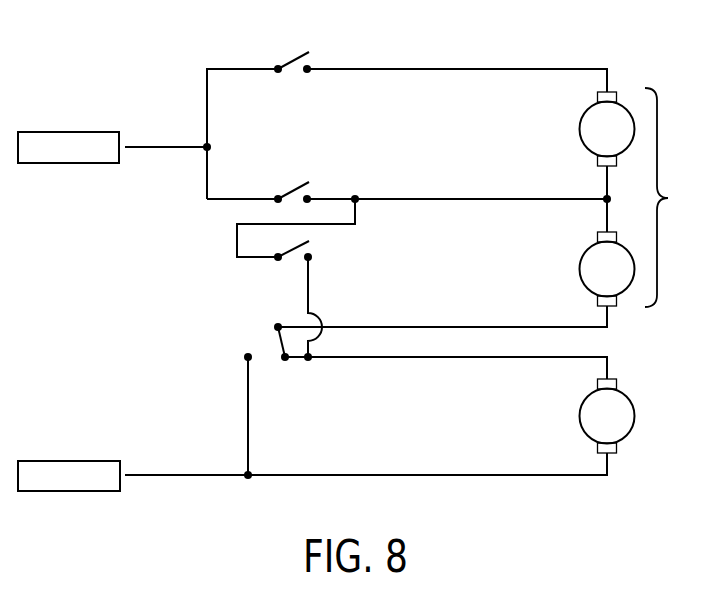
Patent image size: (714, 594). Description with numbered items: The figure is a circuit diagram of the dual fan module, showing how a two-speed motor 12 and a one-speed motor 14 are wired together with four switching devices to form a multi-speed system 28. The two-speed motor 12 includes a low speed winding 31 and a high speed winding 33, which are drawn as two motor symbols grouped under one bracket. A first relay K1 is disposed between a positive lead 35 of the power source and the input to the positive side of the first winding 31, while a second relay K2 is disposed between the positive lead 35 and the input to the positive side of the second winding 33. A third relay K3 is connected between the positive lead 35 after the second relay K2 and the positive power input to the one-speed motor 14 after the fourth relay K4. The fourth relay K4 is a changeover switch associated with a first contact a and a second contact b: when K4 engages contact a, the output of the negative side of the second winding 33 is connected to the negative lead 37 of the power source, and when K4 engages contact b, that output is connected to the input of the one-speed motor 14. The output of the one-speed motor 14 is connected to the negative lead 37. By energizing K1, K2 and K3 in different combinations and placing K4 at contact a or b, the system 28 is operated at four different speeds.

The two-speed motor 12 is at (673, 197).
The one-speed motor 14 is at (579, 417).
The system 28 is at (379, 242).
The low speed winding 31 is at (579, 130).
The high speed winding 33 is at (579, 270).
The positive lead 35 is at (166, 150).
The negative lead 37 is at (192, 478).
The first relay K1 is at (292, 60).
The second relay K2 is at (292, 190).
The third relay K3 is at (290, 249).
The fourth relay K4 is at (281, 345).